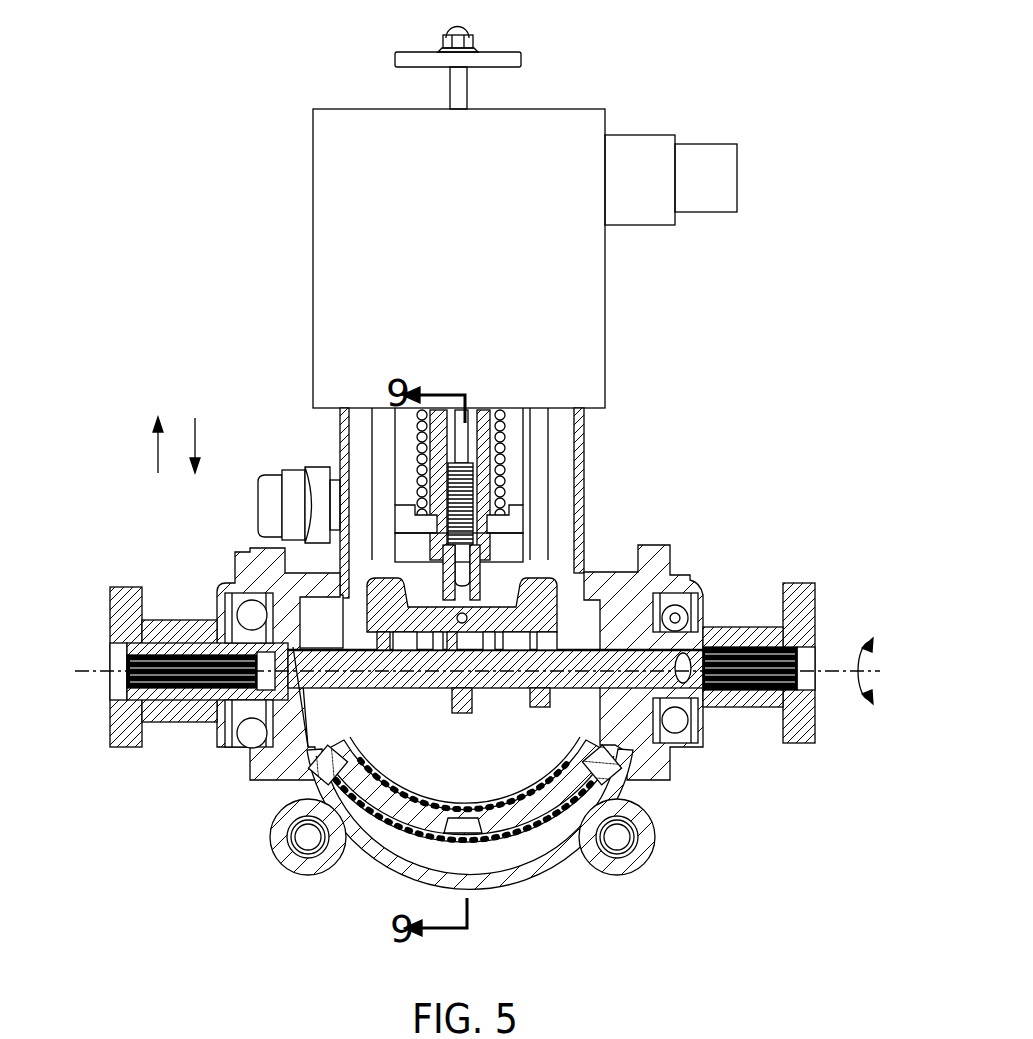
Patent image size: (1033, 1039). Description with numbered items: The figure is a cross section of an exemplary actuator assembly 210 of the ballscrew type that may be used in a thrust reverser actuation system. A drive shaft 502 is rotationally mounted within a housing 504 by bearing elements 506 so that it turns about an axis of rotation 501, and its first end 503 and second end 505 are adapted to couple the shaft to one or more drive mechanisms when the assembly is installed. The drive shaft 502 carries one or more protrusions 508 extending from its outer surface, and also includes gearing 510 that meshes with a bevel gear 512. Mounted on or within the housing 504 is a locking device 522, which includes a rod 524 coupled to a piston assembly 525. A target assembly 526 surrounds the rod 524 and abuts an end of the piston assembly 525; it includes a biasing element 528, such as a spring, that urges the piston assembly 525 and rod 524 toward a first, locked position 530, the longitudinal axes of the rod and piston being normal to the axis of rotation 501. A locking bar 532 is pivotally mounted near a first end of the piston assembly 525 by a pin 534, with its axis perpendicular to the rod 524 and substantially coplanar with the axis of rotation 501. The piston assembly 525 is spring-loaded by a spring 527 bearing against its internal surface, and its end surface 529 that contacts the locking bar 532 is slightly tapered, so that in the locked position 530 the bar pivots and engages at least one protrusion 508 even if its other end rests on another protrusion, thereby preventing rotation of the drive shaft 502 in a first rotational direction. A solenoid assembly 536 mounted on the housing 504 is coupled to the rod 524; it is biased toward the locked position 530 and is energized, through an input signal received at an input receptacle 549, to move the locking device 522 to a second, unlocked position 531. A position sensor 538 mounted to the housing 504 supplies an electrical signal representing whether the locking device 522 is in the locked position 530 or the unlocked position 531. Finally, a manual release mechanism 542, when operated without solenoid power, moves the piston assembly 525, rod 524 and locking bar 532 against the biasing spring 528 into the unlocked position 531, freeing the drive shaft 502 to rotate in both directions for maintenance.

The actuator assembly 210 is at (256, 126).
The axis of rotation 501 is at (86, 674).
The drive shaft 502 is at (720, 710).
The first end 503 is at (112, 645).
The housing 504 is at (795, 584).
The second end 505 is at (815, 633).
The bearing elements 506 is at (228, 758).
The protrusions 508 is at (383, 652).
The gearing 510 is at (600, 712).
The bevel gear 512 is at (432, 801).
The locking device 522 is at (612, 432).
The rod 524 is at (464, 456).
The piston assembly 525 is at (440, 555).
The target assembly 526 is at (555, 495).
The spring 527 is at (425, 490).
The biasing element 528 is at (505, 423).
The end surface 529 is at (540, 562).
The first position 530 is at (196, 440).
The second position 531 is at (157, 450).
The locking bar 532 is at (540, 566).
The pin 534 is at (458, 625).
The solenoid assembly 536 is at (436, 186).
The position sensor 538 is at (258, 512).
The manual release mechanism 542 is at (521, 60).
The input receptacle 549 is at (715, 144).